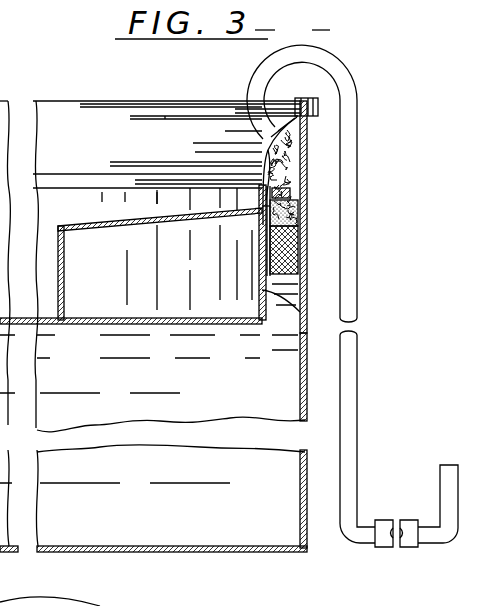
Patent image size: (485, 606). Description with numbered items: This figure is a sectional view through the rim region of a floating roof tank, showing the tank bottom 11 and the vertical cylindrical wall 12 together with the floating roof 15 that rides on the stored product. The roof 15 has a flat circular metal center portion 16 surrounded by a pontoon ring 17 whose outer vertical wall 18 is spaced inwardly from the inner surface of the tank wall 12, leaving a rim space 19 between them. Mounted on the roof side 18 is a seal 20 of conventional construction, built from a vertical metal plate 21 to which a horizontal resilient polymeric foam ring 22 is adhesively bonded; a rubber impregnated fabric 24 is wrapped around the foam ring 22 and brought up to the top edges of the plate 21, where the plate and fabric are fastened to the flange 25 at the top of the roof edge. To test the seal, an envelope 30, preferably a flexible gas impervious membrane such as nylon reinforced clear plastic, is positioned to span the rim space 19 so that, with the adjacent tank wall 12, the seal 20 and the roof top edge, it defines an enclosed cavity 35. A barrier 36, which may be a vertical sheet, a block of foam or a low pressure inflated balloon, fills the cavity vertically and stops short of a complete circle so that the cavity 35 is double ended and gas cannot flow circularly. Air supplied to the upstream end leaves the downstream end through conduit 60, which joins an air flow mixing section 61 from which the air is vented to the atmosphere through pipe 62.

The bottom 11 is at (162, 552).
The wall 12 is at (307, 372).
The floating roof 15 is at (103, 208).
The center portion 16 is at (61, 325).
The pontoon ring 17 is at (163, 204).
The outer vertical wall 18 is at (262, 290).
The rim space 19 is at (283, 287).
The seal 20 is at (289, 217).
The vertical metal plate 21 is at (291, 248).
The resilient polymeric foam ring 22 is at (263, 262).
The rubber impregnated fabric 24 is at (305, 222).
The flange 25 is at (266, 187).
The envelope 30 is at (254, 148).
The cavity 35 is at (300, 162).
The barrier 36 is at (288, 170).
The conduit 60 is at (359, 232).
The air flow mixing section 61 is at (383, 520).
The pipe 62 is at (433, 543).